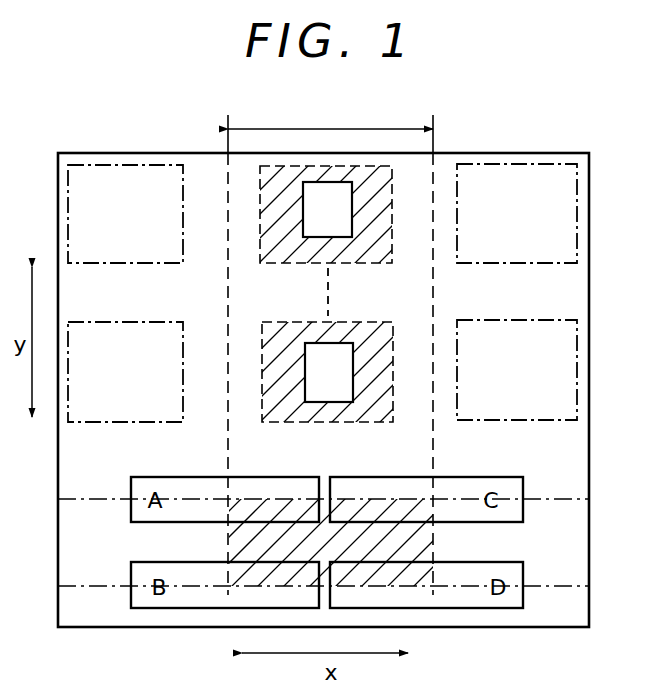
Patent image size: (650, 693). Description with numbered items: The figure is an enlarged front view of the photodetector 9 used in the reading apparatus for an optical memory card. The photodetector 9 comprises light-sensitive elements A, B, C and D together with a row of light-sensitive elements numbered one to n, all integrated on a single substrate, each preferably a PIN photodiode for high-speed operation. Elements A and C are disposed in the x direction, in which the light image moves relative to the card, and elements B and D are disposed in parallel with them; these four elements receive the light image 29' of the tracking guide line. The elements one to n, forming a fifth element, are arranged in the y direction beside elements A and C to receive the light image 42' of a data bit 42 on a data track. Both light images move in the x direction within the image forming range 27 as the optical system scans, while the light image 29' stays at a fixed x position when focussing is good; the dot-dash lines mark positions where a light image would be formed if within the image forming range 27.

The photodetector 9 is at (524, 153).
The image forming range 27 is at (334, 128).
The data bit 42 is at (338, 220).
The light image of the data bit 42' is at (338, 364).
The light image of the tracking guide line 29' is at (330, 517).